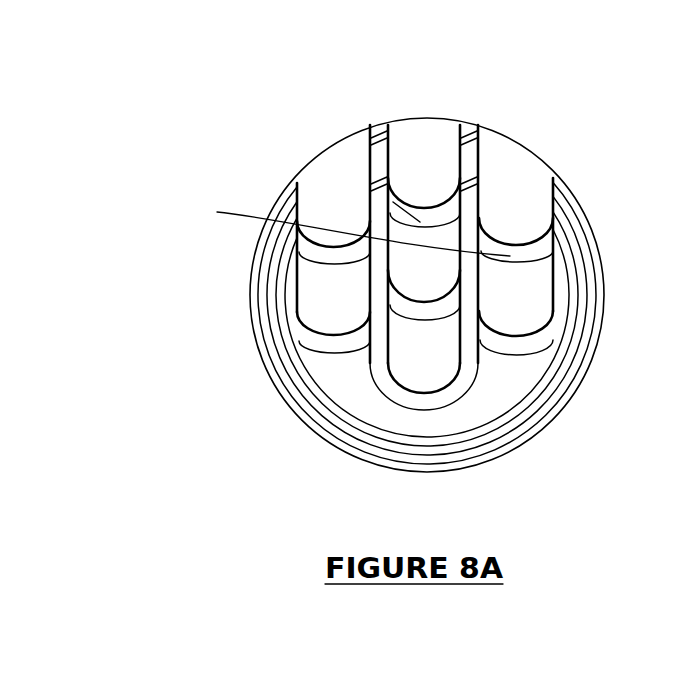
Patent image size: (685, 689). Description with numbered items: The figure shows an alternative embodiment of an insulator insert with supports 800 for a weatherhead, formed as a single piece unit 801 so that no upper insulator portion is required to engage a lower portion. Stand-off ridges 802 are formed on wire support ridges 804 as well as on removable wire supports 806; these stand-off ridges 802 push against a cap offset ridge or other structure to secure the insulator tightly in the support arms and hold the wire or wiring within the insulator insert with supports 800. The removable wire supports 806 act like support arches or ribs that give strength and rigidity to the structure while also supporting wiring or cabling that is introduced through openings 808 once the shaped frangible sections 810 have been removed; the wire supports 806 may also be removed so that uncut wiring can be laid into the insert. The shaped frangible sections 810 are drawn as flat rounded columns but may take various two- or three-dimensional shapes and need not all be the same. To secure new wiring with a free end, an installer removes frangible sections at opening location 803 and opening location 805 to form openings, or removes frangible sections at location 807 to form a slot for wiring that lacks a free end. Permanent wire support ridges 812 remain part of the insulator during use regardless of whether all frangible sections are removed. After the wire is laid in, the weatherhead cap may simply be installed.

The insulator insert with supports 800 is at (310, 112).
The single piece unit 801 is at (312, 425).
The stand-off ridges 802 is at (465, 128).
The opening location 803 is at (527, 312).
The wire support ridges 804 is at (507, 180).
The opening location 805 is at (470, 207).
The removable wire supports 806 is at (297, 183).
The frangible section location 807 is at (340, 168).
The openings 808 is at (510, 300).
The shaped frangible sections 810 is at (330, 158).
The permanent wire support ridges 812 is at (323, 347).